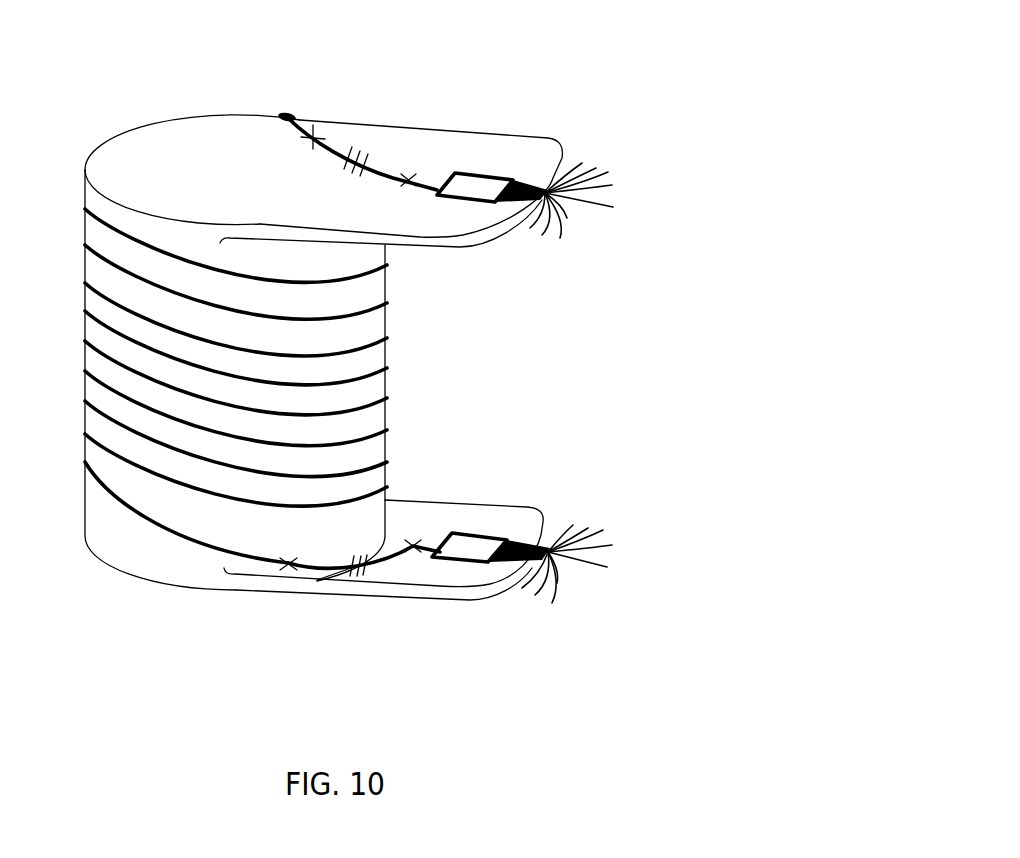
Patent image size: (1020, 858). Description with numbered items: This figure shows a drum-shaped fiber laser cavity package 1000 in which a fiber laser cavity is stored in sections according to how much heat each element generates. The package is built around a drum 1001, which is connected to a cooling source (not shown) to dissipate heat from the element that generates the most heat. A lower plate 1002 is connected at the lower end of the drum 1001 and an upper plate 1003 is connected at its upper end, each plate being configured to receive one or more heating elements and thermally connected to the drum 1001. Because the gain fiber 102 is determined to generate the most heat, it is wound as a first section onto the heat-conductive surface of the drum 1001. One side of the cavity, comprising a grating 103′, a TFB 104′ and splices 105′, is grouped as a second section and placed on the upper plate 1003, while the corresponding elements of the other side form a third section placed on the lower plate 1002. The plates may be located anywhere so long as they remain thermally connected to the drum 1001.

The drum-shaped fiber laser cavity package 1000 is at (670, 41).
The drum 1001 is at (145, 582).
The lower plate 1002 is at (442, 501).
The upper plate 1003 is at (490, 132).
The gain fiber 102 is at (372, 348).
The grating 103′ is at (362, 158).
The TFB 104′ is at (477, 175).
The splices 105′ is at (407, 184).